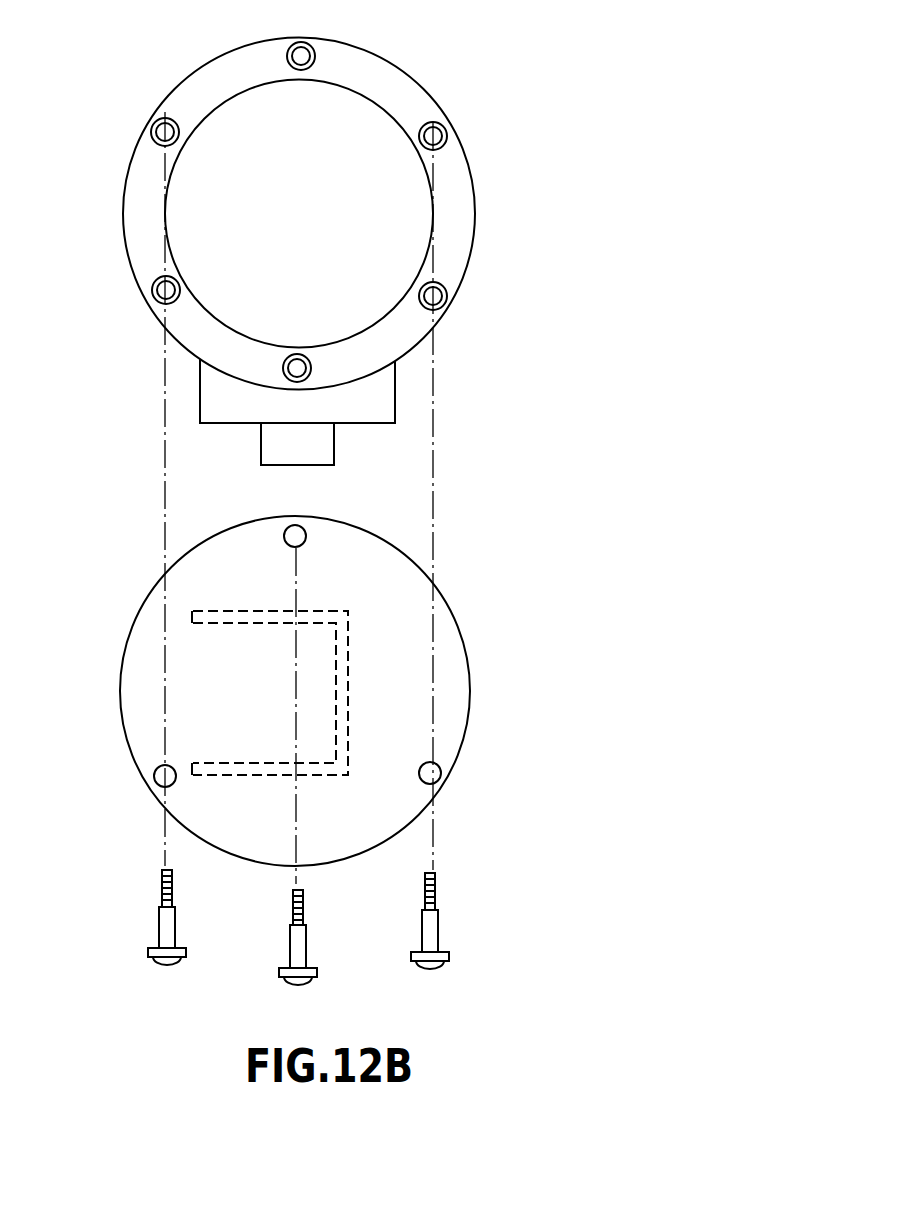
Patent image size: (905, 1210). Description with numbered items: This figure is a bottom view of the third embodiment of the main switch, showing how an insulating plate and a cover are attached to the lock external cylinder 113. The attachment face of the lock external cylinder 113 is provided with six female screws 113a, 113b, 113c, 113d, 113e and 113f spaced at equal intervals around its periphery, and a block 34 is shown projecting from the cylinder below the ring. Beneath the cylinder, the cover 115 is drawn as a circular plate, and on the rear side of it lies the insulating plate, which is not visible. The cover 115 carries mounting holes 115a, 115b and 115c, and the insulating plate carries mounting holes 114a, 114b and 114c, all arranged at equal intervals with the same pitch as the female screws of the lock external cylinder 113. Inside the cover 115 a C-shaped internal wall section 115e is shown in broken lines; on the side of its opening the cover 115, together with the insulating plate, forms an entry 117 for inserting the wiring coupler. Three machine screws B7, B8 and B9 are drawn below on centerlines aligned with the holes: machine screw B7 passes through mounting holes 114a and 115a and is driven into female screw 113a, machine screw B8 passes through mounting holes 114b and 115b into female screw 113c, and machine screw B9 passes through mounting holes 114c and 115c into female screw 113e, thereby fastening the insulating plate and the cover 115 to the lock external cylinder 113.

The lock external cylinder 113 is at (179, 82).
The female screw 113a is at (313, 52).
The female screw 113b is at (446, 133).
The female screw 113c is at (446, 297).
The female screw 113d is at (311, 369).
The female screw 113e is at (160, 296).
The female screw 113f is at (158, 130).
The connector block 34 is at (262, 447).
The cover 115 is at (253, 691).
The entry 117 is at (118, 711).
The C-shaped internal wall section 115e is at (350, 690).
The mounting hole 114a is at (425, 522).
The mounting hole 115a is at (306, 534).
The mounting hole 114b is at (523, 764).
The mounting hole 115b is at (441, 775).
The mounting hole 114c is at (97, 803).
The mounting hole 115c is at (155, 781).
The machine screw B7 is at (290, 934).
The machine screw B8 is at (422, 918).
The machine screw B9 is at (159, 914).